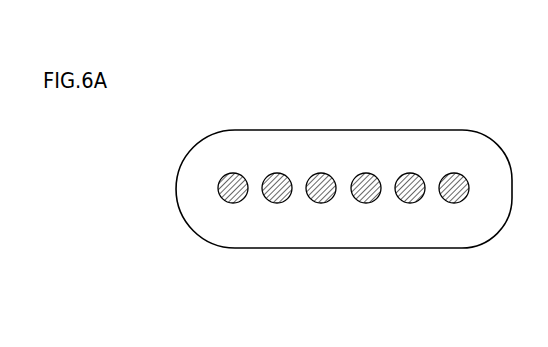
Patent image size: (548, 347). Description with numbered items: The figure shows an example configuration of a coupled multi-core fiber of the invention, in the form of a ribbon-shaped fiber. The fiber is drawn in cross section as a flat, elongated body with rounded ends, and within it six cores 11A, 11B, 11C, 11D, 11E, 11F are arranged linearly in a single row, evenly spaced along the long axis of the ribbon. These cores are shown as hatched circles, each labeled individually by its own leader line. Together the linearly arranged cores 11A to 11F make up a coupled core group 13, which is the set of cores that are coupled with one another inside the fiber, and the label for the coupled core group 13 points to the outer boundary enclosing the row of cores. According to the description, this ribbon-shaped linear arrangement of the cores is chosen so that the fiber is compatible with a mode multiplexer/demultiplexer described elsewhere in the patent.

The coupled core group 13 is at (337, 133).
The core 11A is at (233, 203).
The core 11B is at (277, 203).
The core 11C is at (321, 203).
The core 11D is at (366, 203).
The core 11E is at (410, 203).
The core 11F is at (454, 203).